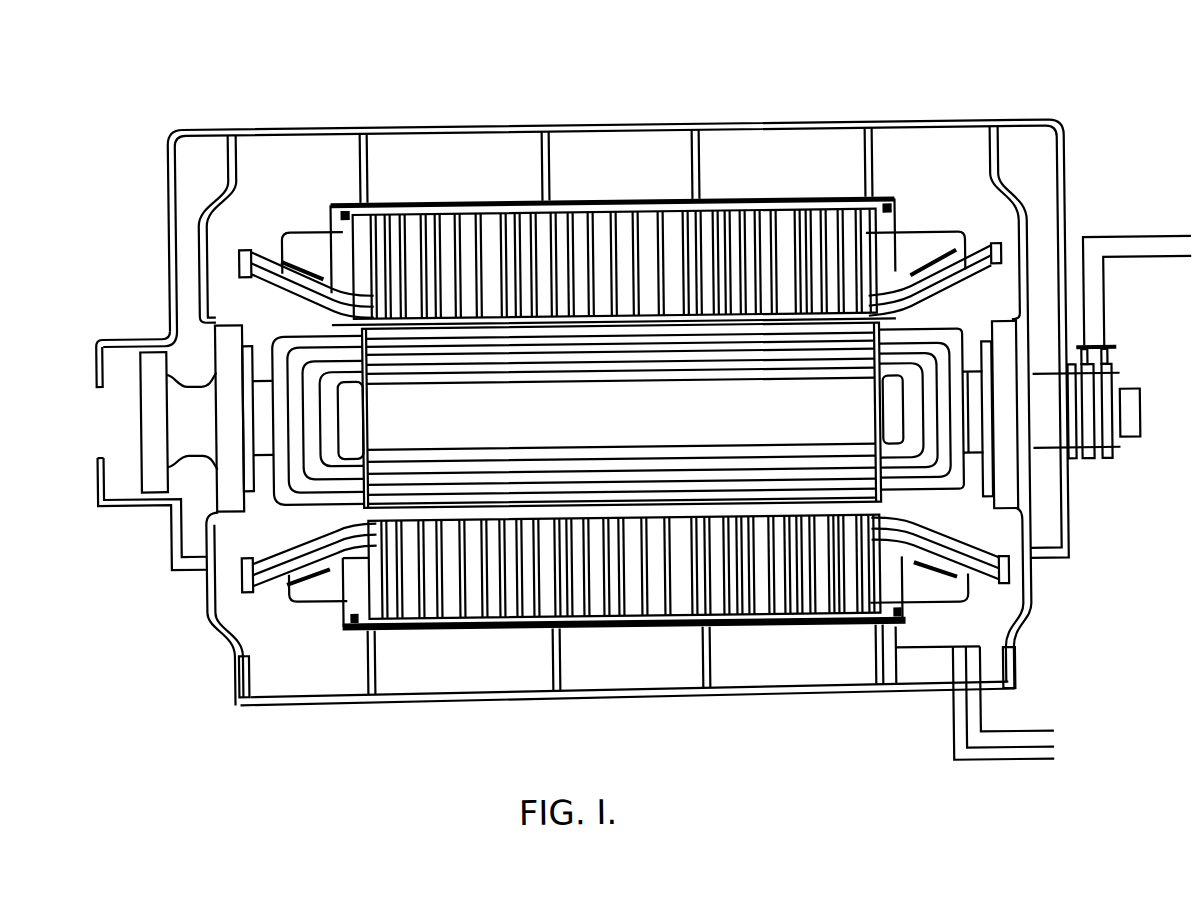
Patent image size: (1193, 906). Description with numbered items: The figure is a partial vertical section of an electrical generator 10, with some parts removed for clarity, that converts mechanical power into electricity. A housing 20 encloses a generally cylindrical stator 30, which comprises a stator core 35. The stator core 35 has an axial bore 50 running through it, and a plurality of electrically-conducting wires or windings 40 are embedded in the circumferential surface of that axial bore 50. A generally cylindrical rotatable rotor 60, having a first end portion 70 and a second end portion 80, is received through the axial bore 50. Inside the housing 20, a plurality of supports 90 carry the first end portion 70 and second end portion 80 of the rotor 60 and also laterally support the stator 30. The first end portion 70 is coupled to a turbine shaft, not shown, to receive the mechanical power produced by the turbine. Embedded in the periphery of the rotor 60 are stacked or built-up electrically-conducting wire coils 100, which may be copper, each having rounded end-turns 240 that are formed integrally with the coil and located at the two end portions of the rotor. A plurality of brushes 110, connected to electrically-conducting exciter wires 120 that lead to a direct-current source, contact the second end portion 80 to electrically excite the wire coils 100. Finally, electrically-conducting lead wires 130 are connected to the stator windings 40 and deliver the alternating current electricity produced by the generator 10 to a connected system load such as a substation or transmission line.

The electrical generator 10 is at (862, 110).
The housing 20 is at (284, 121).
The stator 30 is at (428, 201).
The stator core 35 is at (495, 231).
The windings 40 is at (977, 239).
The axial bore 50 is at (648, 316).
The rotor 60 is at (825, 386).
The first end portion 70 is at (227, 371).
The second end portion 80 is at (1007, 400).
The supports 90 is at (1029, 607).
The wire coils 100 is at (322, 469).
The brushes 110 is at (1107, 350).
The exciter wires 120 is at (1137, 241).
The lead wires 130 is at (1013, 768).
The end-turns 240 is at (320, 346).